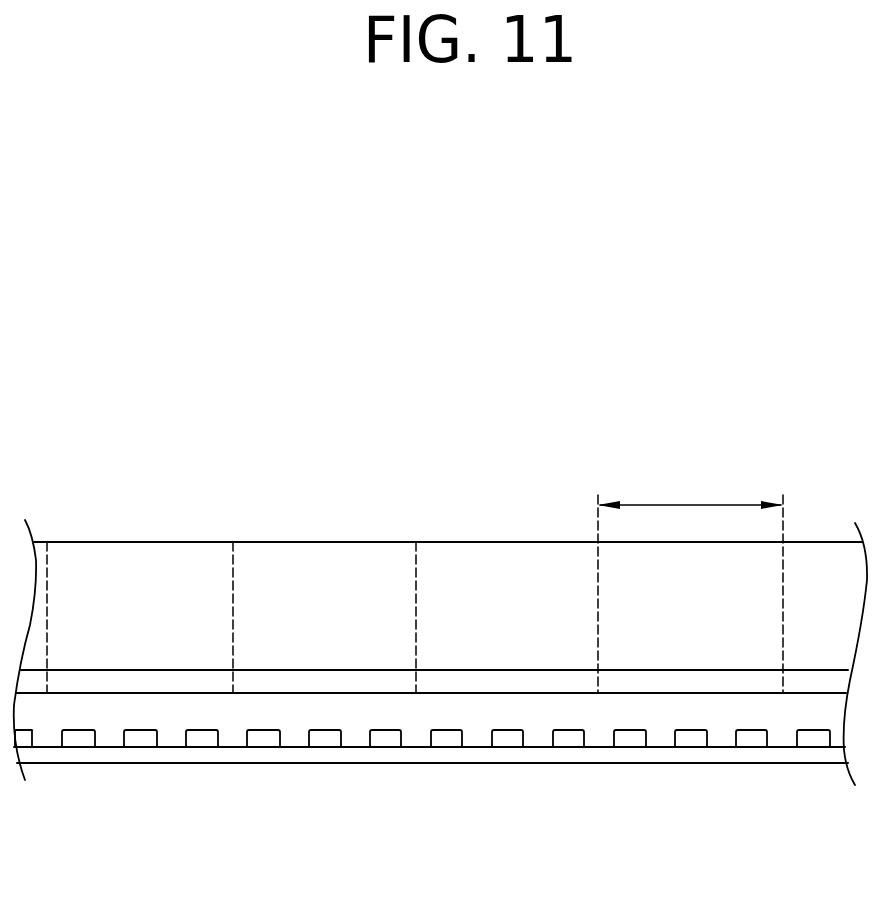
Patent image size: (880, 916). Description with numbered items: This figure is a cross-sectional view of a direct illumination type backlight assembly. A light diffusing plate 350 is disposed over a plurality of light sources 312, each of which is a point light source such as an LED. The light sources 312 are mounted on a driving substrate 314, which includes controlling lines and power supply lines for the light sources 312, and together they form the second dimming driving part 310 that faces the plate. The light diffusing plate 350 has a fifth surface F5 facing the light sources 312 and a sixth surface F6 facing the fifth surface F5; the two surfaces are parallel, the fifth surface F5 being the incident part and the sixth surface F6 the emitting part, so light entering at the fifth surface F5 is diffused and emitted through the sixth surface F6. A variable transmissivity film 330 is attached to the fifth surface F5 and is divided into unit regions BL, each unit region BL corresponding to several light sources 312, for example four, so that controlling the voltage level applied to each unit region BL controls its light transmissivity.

The second dimming driving part 310 is at (667, 860).
The light sources 312 is at (567, 738).
The driving substrate 314 is at (642, 755).
The variable transmissivity film 330 is at (553, 682).
The light diffusing plate 350 is at (383, 456).
The fifth surface F5 is at (268, 672).
The sixth surface F6 is at (358, 543).
The unit region BL is at (690, 488).